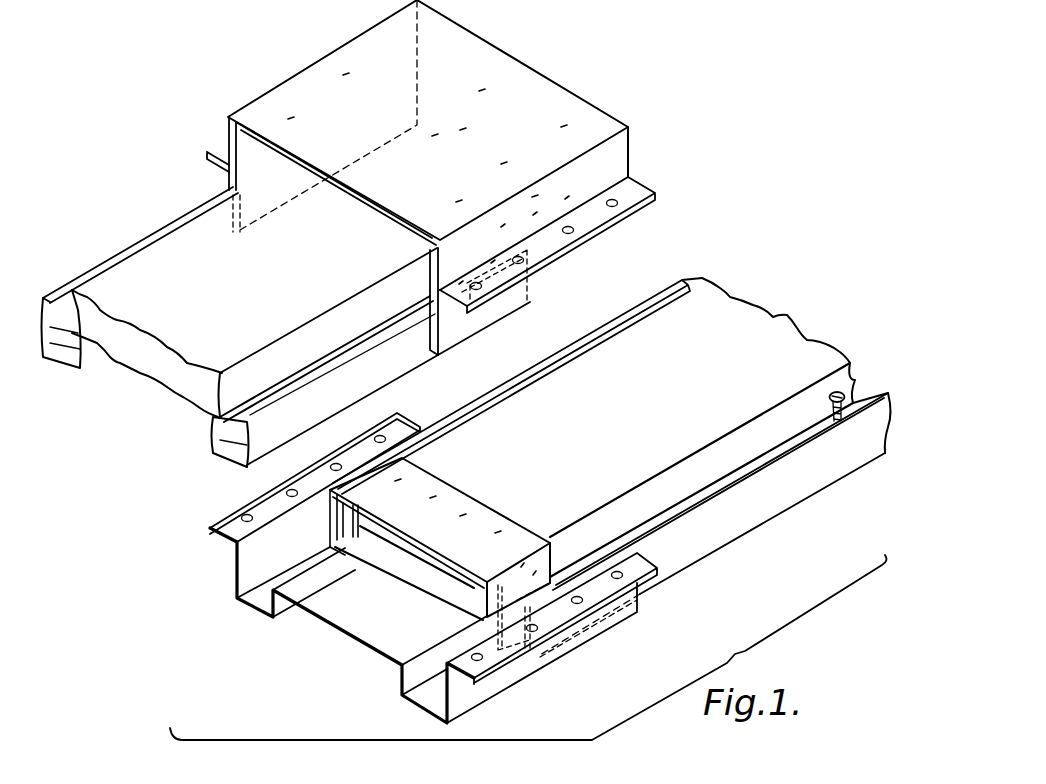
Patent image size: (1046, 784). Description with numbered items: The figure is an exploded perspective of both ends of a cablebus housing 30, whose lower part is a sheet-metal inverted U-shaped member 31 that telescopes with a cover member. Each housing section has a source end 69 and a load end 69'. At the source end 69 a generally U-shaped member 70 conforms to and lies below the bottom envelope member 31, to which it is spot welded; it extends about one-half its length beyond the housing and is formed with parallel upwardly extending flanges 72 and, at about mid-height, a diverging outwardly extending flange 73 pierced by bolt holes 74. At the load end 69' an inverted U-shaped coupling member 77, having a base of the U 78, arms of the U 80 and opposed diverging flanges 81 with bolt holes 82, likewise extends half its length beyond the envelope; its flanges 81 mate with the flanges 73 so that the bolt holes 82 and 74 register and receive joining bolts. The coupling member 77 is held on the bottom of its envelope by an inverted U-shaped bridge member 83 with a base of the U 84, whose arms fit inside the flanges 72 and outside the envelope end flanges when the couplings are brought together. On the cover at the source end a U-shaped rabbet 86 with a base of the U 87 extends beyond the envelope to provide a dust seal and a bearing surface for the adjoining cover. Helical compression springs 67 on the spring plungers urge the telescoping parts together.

The cablebus housing 30 is at (800, 306).
The inverted U-shaped member 31 is at (167, 370).
The helical compression springs 67 is at (833, 392).
The source end 69 is at (413, 568).
The load end 69' is at (422, 180).
The U-shaped member 70 is at (362, 627).
The parallel upwardly extending flanges 72 is at (233, 567).
The diverging outwardly extending flange 73 is at (273, 497).
The bolt holes 74 is at (242, 515).
The inverted U-shaped coupling member 77 is at (623, 153).
The base of the U 78 is at (428, 142).
The arms of the U 80 is at (228, 144).
The opposed diverging flanges 81 is at (207, 154).
The bolt holes 82 is at (483, 288).
The bridge member 83 is at (352, 210).
The base of the U 84 is at (317, 182).
The U-shaped rabbet 86 is at (450, 508).
The base of the U 87 is at (497, 537).